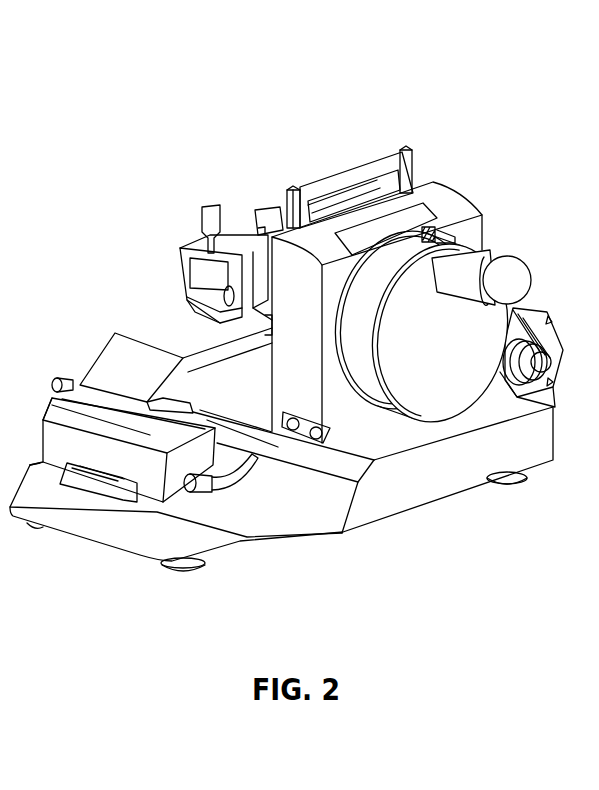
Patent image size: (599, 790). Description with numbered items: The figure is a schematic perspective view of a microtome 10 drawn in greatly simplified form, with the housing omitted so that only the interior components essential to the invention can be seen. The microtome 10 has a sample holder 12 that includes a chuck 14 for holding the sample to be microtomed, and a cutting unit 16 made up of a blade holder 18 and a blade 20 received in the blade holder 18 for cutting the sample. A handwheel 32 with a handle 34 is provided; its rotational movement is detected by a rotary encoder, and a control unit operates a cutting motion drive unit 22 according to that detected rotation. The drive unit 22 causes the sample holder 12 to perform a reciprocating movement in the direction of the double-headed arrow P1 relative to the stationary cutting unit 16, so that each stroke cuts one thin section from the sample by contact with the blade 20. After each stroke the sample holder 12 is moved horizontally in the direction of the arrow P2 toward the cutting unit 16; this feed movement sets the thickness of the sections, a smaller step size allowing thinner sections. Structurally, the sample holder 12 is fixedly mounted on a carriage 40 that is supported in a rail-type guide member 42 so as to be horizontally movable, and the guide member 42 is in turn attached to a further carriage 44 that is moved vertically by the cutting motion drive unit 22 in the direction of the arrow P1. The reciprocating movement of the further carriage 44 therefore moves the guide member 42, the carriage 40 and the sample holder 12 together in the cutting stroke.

The microtome 10 is at (406, 78).
The sample holder 12 is at (173, 205).
The chuck 14 is at (200, 291).
The cutting unit 16 is at (58, 296).
The blade holder 18 is at (127, 373).
The blade 20 is at (165, 362).
The cutting motion drive unit 22 is at (527, 305).
The handwheel 32 is at (440, 390).
The handle 34 is at (498, 263).
The carriage 40 is at (243, 232).
The rail-type guide member 42 is at (263, 215).
The further carriage 44 is at (332, 181).
The double-headed arrow P1 is at (143, 182).
The arrow P2 is at (372, 147).